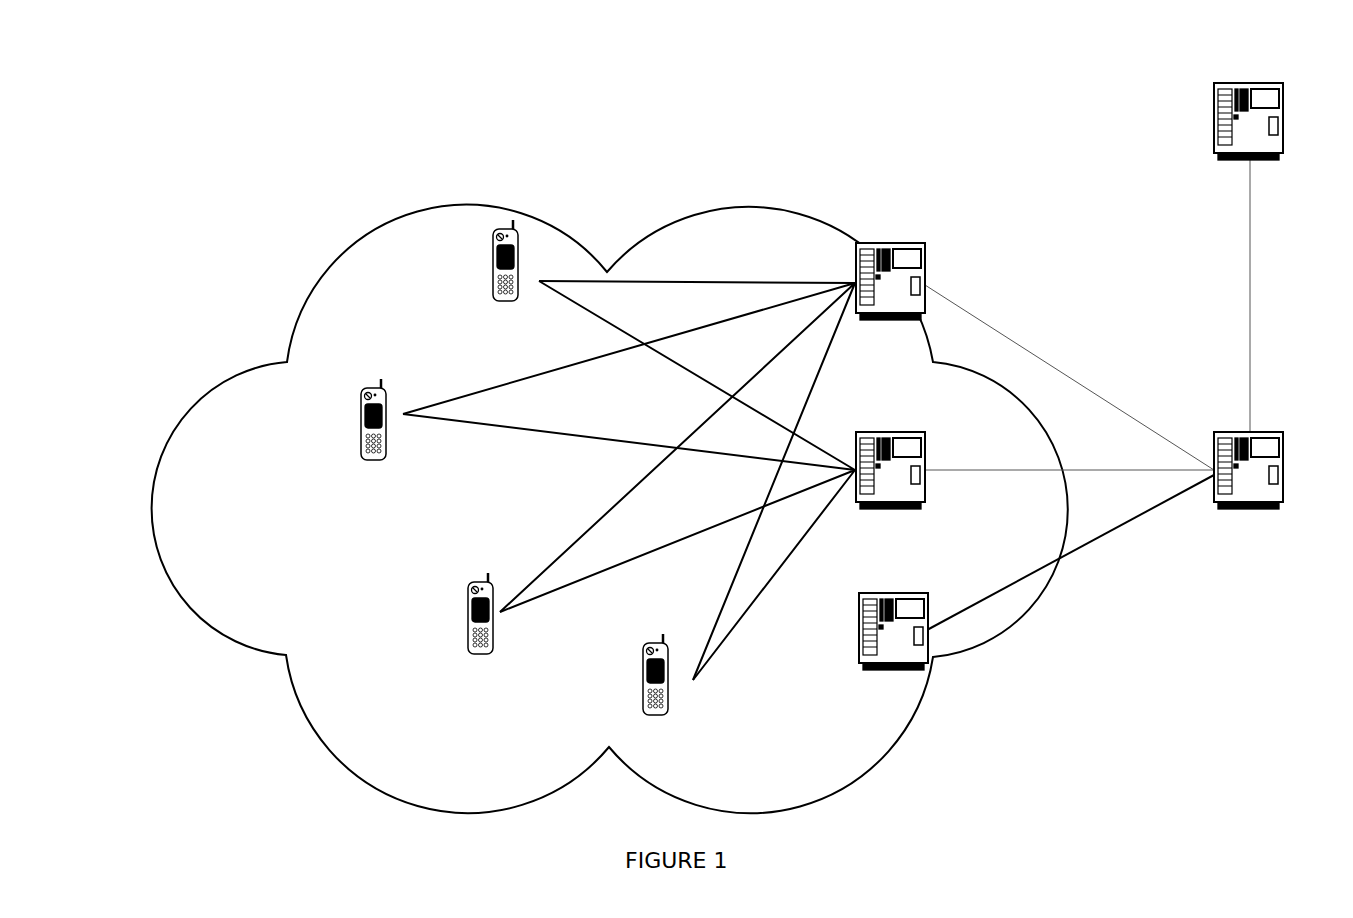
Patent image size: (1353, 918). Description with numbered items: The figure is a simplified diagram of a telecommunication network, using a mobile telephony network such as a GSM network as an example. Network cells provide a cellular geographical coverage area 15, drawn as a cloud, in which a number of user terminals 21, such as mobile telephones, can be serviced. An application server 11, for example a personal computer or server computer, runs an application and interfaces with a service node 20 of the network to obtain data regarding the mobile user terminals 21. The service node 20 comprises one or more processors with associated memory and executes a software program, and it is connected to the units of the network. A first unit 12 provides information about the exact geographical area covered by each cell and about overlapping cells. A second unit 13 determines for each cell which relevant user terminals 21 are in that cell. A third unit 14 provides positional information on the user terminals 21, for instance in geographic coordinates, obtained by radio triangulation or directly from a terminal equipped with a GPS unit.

The application server 11 is at (1283, 100).
The first unit 12 is at (928, 593).
The second unit 13 is at (925, 432).
The third unit 14 is at (925, 245).
The geographical coverage area 15 is at (306, 672).
The service node 20 is at (1283, 440).
The user terminal 21 is at (494, 257).